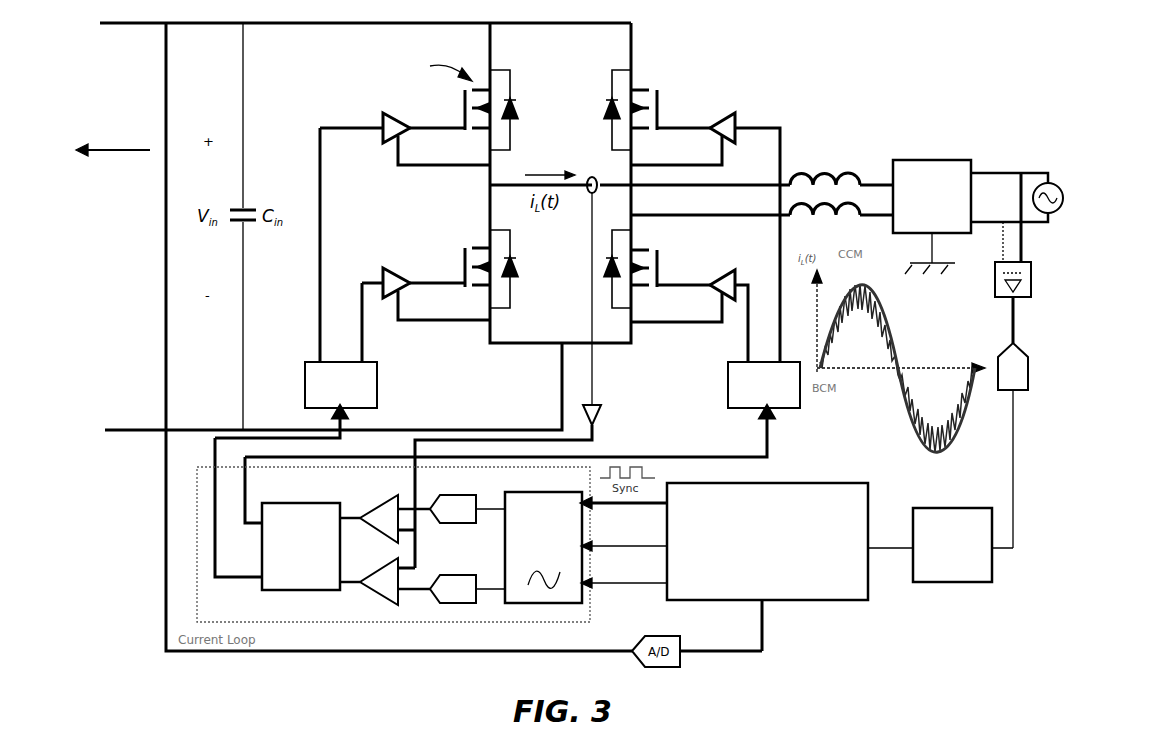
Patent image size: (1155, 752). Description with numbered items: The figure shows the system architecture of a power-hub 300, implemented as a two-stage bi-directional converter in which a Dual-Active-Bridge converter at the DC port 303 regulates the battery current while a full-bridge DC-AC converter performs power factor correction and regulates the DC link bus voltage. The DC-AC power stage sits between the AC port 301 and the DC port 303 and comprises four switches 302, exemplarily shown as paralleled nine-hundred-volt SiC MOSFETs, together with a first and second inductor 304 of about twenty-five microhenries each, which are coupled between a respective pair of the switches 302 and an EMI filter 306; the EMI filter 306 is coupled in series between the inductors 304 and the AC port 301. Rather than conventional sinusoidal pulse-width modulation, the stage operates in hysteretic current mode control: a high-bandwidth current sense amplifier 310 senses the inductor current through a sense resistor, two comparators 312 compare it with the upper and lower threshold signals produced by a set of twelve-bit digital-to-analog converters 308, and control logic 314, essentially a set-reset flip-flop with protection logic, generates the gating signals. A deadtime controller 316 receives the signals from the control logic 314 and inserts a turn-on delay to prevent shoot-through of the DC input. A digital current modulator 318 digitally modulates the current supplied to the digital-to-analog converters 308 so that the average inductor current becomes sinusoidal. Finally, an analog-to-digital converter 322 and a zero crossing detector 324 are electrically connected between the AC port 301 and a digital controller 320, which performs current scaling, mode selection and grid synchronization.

The power-hub 300 is at (828, 62).
The AC port 301 is at (1070, 166).
The switches 302 is at (680, 73).
The DC port 303 is at (185, 170).
The first and second inductor 304 is at (835, 130).
The EMI filter 306 is at (932, 160).
The digital-to-analog converters 308 is at (432, 603).
The current sense amplifier 310 is at (583, 410).
The comparators 312 is at (385, 600).
The control logic 314 is at (262, 553).
The deadtime controller 316 is at (377, 386).
The digital current modulator 318 is at (512, 603).
The digital controller 320 is at (840, 590).
The analog-to-digital converter 322 is at (1028, 367).
The zero crossing detector 324 is at (940, 595).